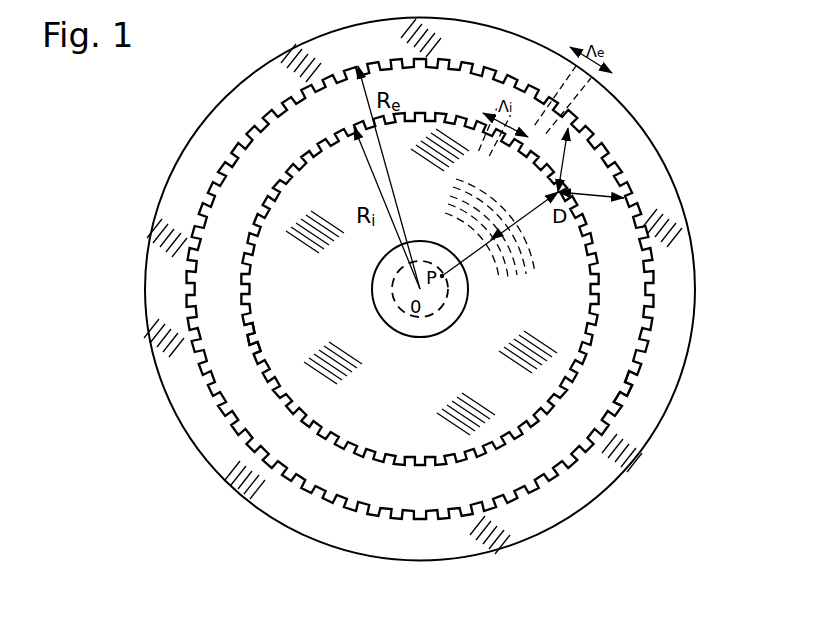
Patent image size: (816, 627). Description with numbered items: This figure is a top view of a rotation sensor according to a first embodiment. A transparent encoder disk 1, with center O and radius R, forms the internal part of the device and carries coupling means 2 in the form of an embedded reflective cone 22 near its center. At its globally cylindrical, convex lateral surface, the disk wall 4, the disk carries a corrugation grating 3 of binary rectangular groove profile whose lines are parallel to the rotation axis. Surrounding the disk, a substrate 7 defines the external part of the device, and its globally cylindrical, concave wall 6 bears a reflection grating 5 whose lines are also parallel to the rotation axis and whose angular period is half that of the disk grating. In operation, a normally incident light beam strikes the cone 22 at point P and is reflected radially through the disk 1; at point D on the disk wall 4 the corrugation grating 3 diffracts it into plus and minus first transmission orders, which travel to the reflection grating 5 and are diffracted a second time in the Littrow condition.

The transparent encoder disk 1 is at (362, 395).
The coupling means 2 is at (434, 312).
The embedded reflective cone 22 is at (400, 341).
The corrugation grating 3 is at (592, 300).
The disk wall 4 is at (263, 343).
The reflection grating 5 is at (648, 328).
The wall of substrate 6 is at (632, 398).
The substrate 7 is at (685, 265).